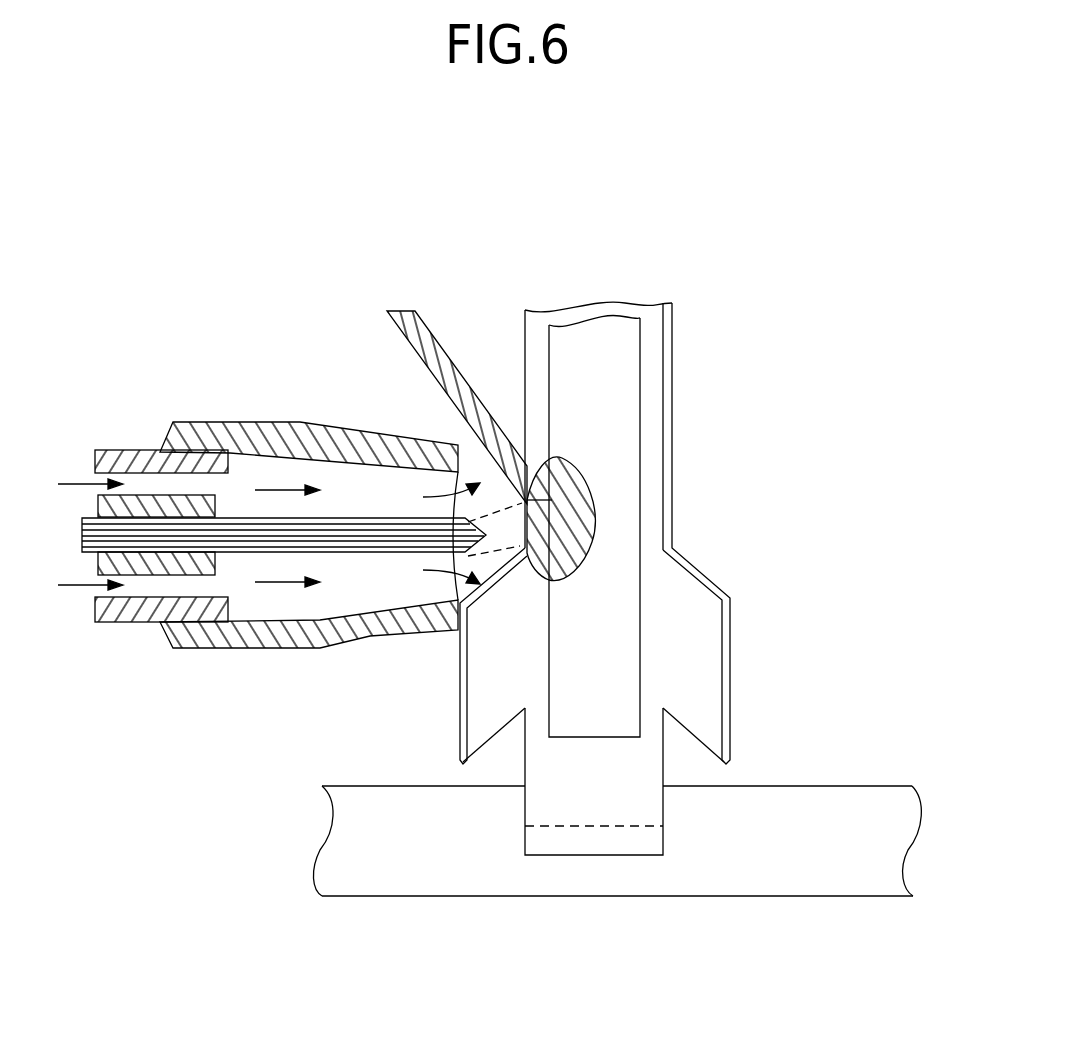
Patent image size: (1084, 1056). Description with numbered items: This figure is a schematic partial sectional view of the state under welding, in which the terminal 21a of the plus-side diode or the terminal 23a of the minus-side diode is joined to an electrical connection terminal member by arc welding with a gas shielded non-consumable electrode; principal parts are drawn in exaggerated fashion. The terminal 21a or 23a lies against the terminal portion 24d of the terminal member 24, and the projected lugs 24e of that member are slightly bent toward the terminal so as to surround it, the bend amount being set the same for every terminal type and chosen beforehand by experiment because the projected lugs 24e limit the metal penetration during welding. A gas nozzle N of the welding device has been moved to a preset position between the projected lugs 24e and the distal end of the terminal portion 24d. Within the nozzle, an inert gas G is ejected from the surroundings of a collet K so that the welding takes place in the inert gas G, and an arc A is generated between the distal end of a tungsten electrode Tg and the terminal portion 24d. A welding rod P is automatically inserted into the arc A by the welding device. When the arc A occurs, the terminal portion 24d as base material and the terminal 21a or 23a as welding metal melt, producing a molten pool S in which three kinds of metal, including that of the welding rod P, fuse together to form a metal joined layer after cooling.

The inert gas G is at (74, 482).
The collet K is at (132, 500).
The gas nozzle N is at (242, 422).
The tungsten electrode Tg is at (240, 553).
The welding rod P is at (405, 310).
The arc A is at (503, 575).
The molten pool S is at (600, 513).
The terminal portion 24d is at (577, 345).
The terminal of the plus-side diode 21a is at (702, 526).
The terminal of the minus-side diode 23a is at (632, 400).
The projected lugs 24e is at (480, 716).
The fixing member / base plate 24 is at (862, 796).